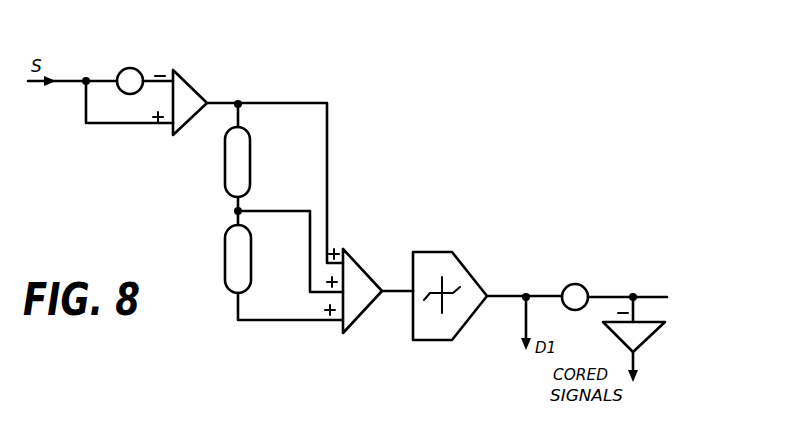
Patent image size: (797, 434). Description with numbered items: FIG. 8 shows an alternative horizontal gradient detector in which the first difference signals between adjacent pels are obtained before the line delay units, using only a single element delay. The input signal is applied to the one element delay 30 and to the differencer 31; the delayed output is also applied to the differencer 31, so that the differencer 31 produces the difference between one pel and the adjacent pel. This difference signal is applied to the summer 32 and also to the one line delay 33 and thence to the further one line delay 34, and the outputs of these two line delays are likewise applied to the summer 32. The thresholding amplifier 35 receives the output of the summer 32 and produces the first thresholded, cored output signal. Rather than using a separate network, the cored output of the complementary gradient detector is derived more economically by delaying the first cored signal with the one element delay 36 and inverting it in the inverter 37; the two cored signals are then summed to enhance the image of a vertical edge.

The 1 element delay 30 is at (144, 61).
The differencer 31 is at (197, 118).
The summer 32 is at (370, 266).
The 1 line delay 33 is at (250, 156).
The 1 line delay 34 is at (252, 257).
The amplifier 35 is at (462, 325).
The one element delay 36 is at (579, 284).
The inverter 37 is at (617, 338).